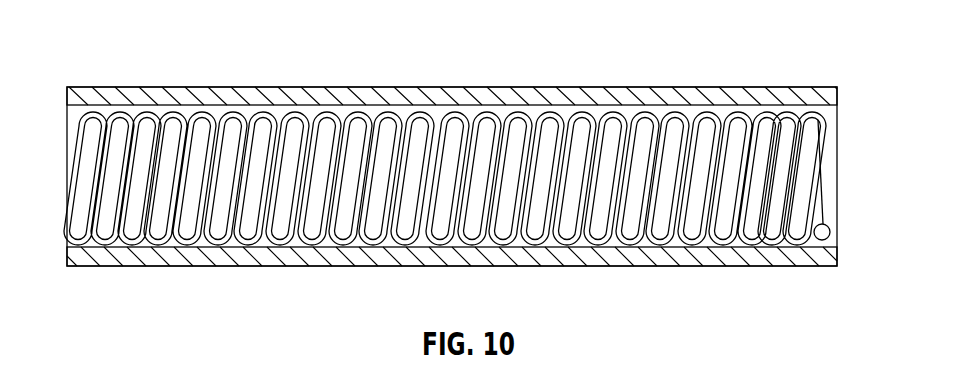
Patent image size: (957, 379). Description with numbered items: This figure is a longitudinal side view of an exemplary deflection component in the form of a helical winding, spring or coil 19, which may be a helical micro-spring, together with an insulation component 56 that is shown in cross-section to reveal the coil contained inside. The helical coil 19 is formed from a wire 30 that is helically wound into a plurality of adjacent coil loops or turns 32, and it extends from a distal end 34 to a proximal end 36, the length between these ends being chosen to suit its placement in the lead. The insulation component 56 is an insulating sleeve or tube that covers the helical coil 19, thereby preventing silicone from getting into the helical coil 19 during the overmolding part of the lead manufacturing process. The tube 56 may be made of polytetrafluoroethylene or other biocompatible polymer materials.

The helical coil 19 is at (374, 57).
The wire 30 is at (818, 242).
The coil loops or turns 32 is at (207, 108).
The distal end 34 is at (101, 67).
The proximal end 36 is at (832, 58).
The insulation component 56 is at (640, 98).